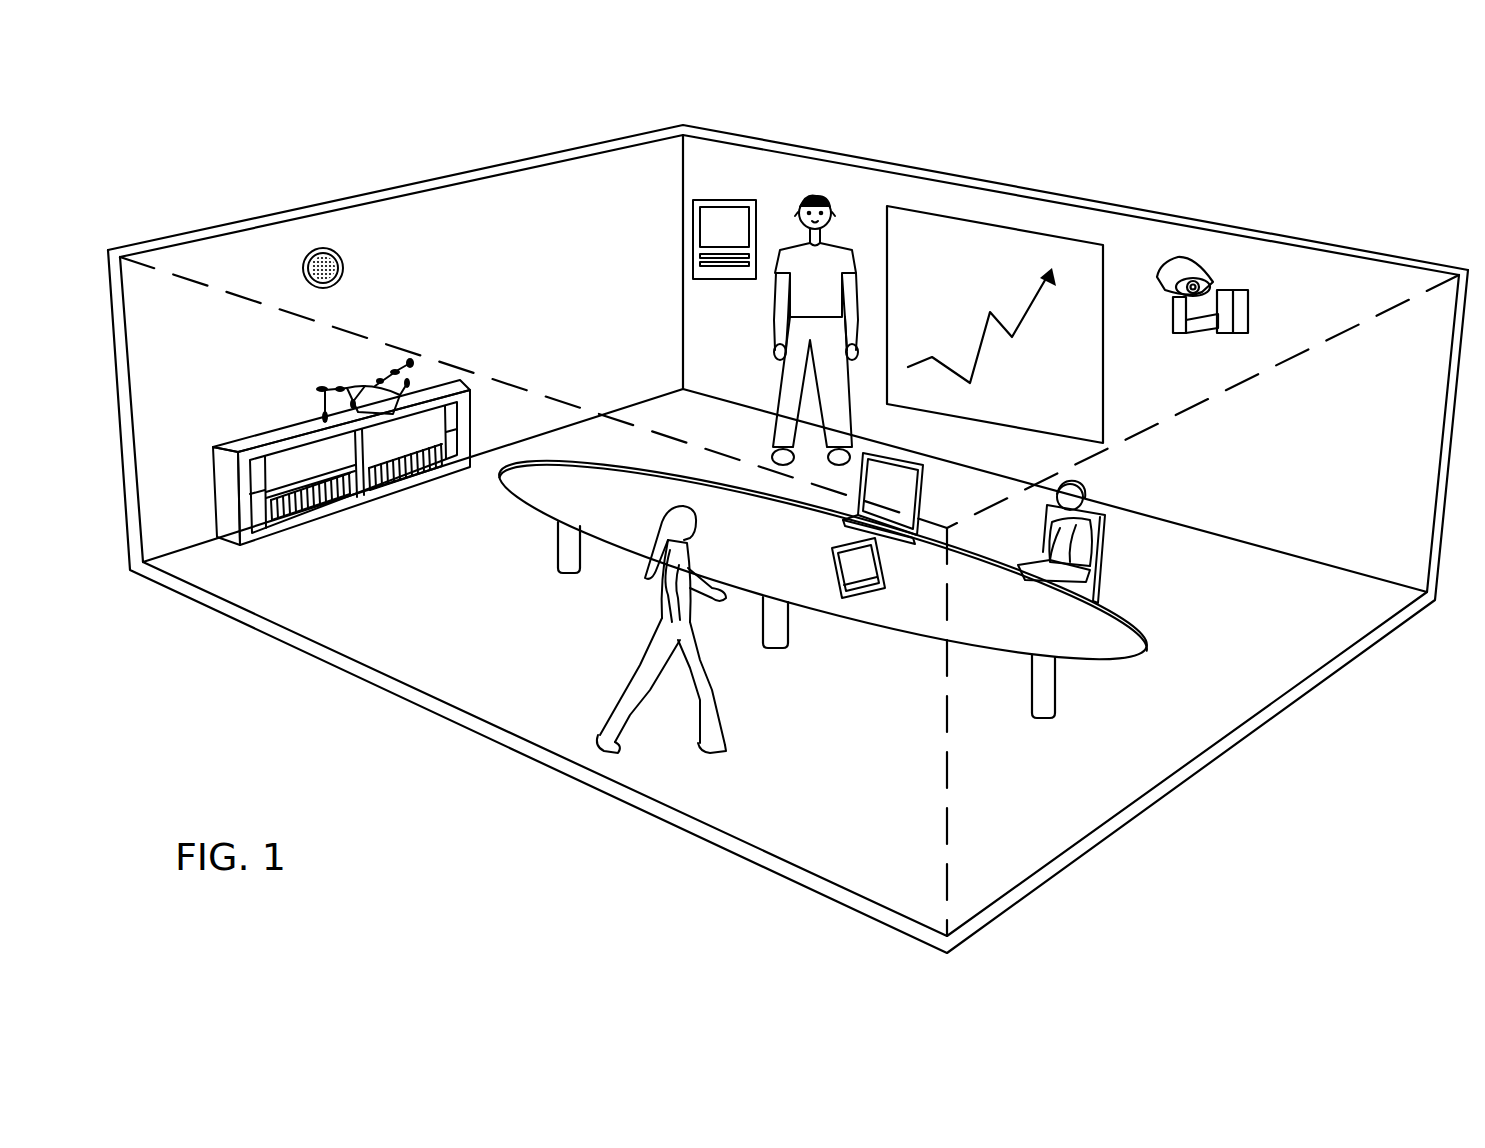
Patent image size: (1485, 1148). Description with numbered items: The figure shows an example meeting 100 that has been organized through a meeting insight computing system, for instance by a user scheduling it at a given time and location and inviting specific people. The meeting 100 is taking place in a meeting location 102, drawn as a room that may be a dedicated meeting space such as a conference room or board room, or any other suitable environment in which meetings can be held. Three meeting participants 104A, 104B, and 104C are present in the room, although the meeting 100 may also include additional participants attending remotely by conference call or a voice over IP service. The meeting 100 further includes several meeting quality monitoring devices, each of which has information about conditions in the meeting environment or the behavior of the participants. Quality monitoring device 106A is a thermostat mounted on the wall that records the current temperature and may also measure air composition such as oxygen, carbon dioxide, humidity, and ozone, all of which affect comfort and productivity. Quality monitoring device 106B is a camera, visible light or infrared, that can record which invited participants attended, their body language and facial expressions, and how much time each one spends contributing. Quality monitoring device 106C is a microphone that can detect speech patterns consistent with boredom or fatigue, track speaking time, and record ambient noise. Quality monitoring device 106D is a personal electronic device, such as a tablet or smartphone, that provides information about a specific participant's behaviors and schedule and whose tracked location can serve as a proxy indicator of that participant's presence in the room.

The meeting 100 is at (180, 76).
The meeting location 102 is at (590, 137).
The meeting participant 104A is at (812, 198).
The meeting participant 104B is at (650, 590).
The meeting participant 104C is at (1082, 486).
The thermostat 106A is at (692, 240).
The camera 106B is at (1250, 310).
The microphone 106C is at (385, 243).
The personal electronic device 106D is at (832, 574).